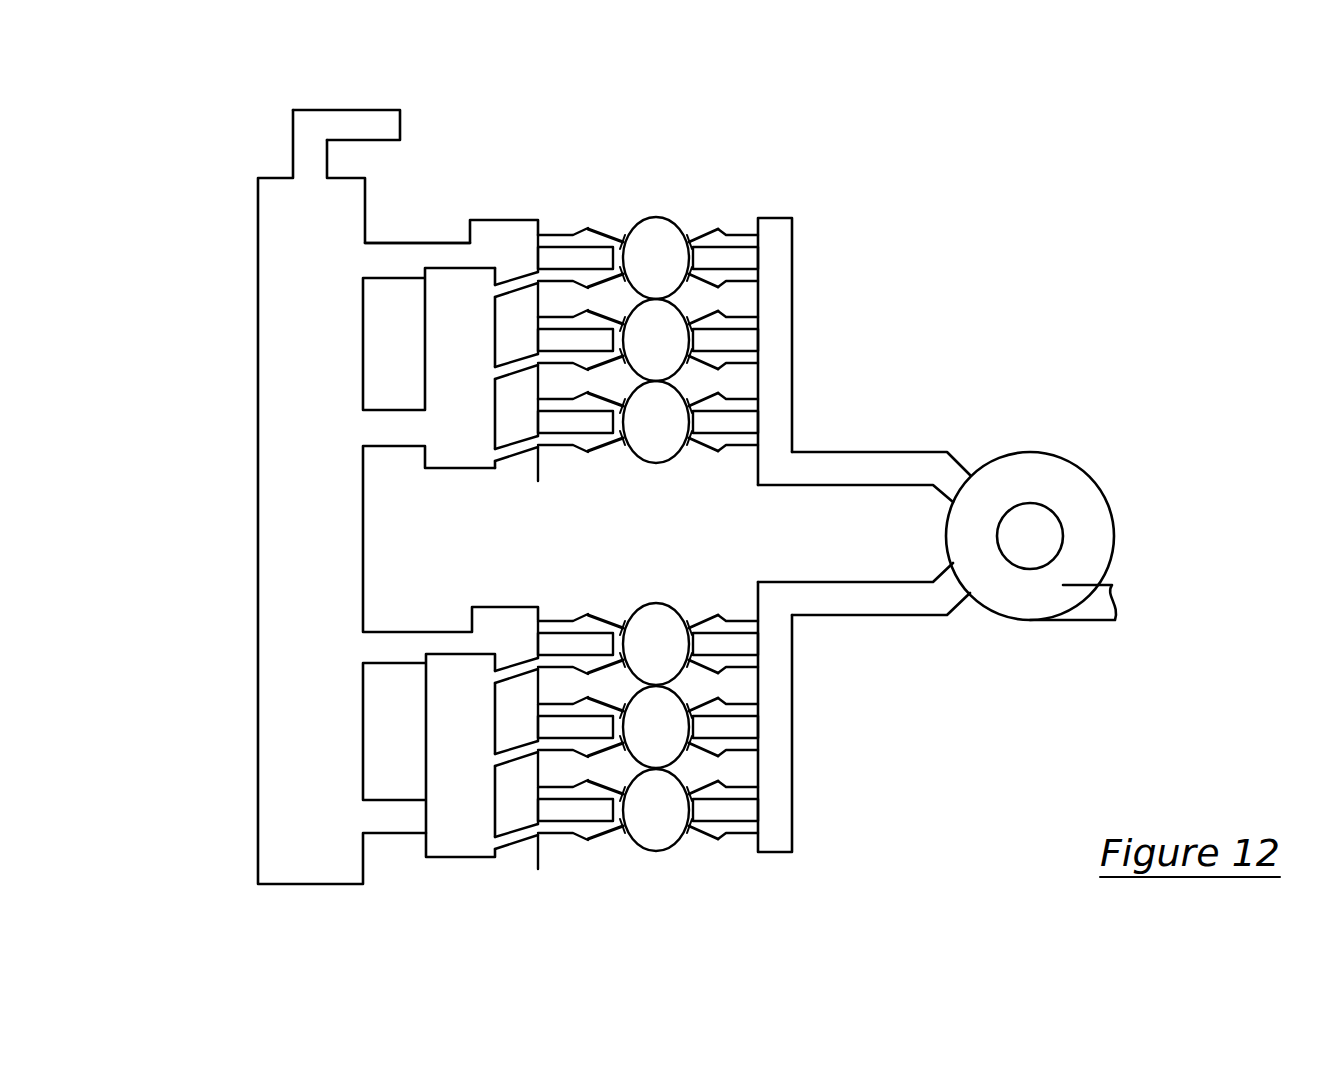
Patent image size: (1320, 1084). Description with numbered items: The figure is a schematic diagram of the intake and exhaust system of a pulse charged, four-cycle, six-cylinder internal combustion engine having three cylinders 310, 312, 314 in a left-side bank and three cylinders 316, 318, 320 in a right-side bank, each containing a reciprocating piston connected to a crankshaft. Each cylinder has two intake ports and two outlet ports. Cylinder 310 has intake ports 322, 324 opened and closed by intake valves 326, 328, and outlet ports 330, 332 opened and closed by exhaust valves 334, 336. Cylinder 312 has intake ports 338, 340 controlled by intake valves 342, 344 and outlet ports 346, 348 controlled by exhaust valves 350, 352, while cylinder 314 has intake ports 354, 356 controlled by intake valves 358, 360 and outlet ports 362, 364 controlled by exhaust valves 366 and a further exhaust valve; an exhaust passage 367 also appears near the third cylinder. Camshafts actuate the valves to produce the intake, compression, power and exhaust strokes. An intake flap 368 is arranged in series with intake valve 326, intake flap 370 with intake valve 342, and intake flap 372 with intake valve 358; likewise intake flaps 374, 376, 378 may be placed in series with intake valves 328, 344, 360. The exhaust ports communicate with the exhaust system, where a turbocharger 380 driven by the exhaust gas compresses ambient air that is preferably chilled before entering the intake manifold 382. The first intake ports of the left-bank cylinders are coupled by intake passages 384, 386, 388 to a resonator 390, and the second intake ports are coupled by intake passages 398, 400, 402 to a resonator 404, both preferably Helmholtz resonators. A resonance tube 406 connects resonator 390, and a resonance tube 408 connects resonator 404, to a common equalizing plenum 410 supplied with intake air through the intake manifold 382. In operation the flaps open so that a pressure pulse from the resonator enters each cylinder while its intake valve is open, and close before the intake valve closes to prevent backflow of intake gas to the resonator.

The cylinder 310 is at (657, 220).
The cylinder 312 is at (668, 250).
The cylinder 314 is at (645, 466).
The cylinder 316 is at (630, 605).
The cylinder 318 is at (755, 755).
The cylinder 320 is at (648, 852).
The intake port 322 is at (620, 238).
The intake port 324 is at (520, 262).
The intake valve 326 is at (587, 230).
The intake valve 328 is at (545, 275).
The outlet port 330 is at (697, 222).
The outlet port 332 is at (797, 235).
The exhaust valve 334 is at (718, 232).
The exhaust valve 336 is at (770, 218).
The intake port 338 is at (655, 270).
The intake port 340 is at (560, 390).
The intake valve 342 is at (575, 270).
The intake valve 344 is at (565, 360).
The outlet port 346 is at (750, 290).
The outlet port 348 is at (760, 365).
The exhaust valve 350 is at (750, 305).
The exhaust valve 352 is at (755, 325).
The intake port 354 is at (560, 400).
The intake port 356 is at (616, 460).
The intake valve 358 is at (550, 420).
The intake valve 360 is at (560, 445).
The outlet port 362 is at (755, 382).
The outlet port 364 is at (705, 462).
The exhaust valve 366 is at (755, 402).
The exhaust passage 367 is at (743, 462).
The intake flap 368 is at (552, 228).
The intake flap 370 is at (587, 283).
The intake flap 372 is at (497, 418).
The intake flap 374 is at (535, 248).
The intake flap 376 is at (575, 350).
The intake flap 378 is at (525, 440).
The turbocharger 380 is at (1090, 477).
The intake manifold 382 is at (402, 124).
The intake passage 384 is at (547, 232).
The intake passage 386 is at (548, 325).
The intake passage 388 is at (548, 455).
The resonator 390 is at (500, 250).
The intake passage 398 is at (541, 235).
The intake passage 400 is at (560, 335).
The intake passage 402 is at (528, 470).
The resonator 404 is at (426, 457).
The resonance tube 406 is at (426, 243).
The resonance tube 408 is at (387, 410).
The equalizing plenum 410 is at (258, 525).